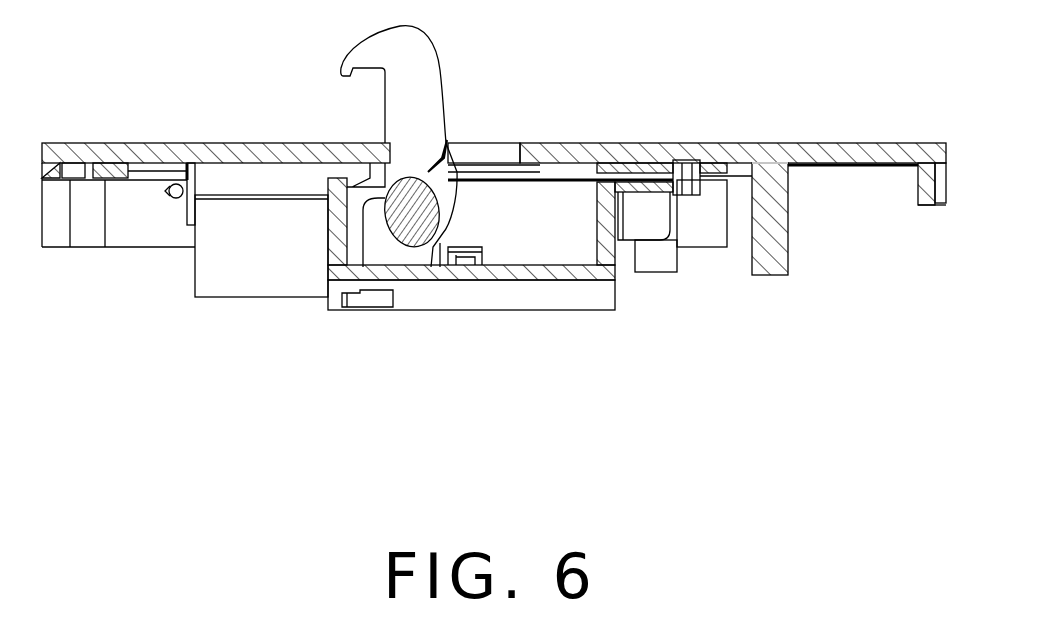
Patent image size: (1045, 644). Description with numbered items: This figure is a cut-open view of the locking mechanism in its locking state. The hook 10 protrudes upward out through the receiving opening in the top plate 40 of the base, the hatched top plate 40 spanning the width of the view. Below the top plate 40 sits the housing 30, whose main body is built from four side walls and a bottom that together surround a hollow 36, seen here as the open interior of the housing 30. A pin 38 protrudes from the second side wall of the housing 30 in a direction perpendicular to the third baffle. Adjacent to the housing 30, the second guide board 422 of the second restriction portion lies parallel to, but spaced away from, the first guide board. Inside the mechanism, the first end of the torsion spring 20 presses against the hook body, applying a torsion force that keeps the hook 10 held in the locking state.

The hook 10 is at (420, 90).
The torsion spring 20 is at (440, 148).
The housing 30 is at (523, 297).
The hollow 36 is at (548, 207).
The pin 38 is at (177, 198).
The top plate 40 is at (725, 150).
The second guide board 422 is at (222, 187).